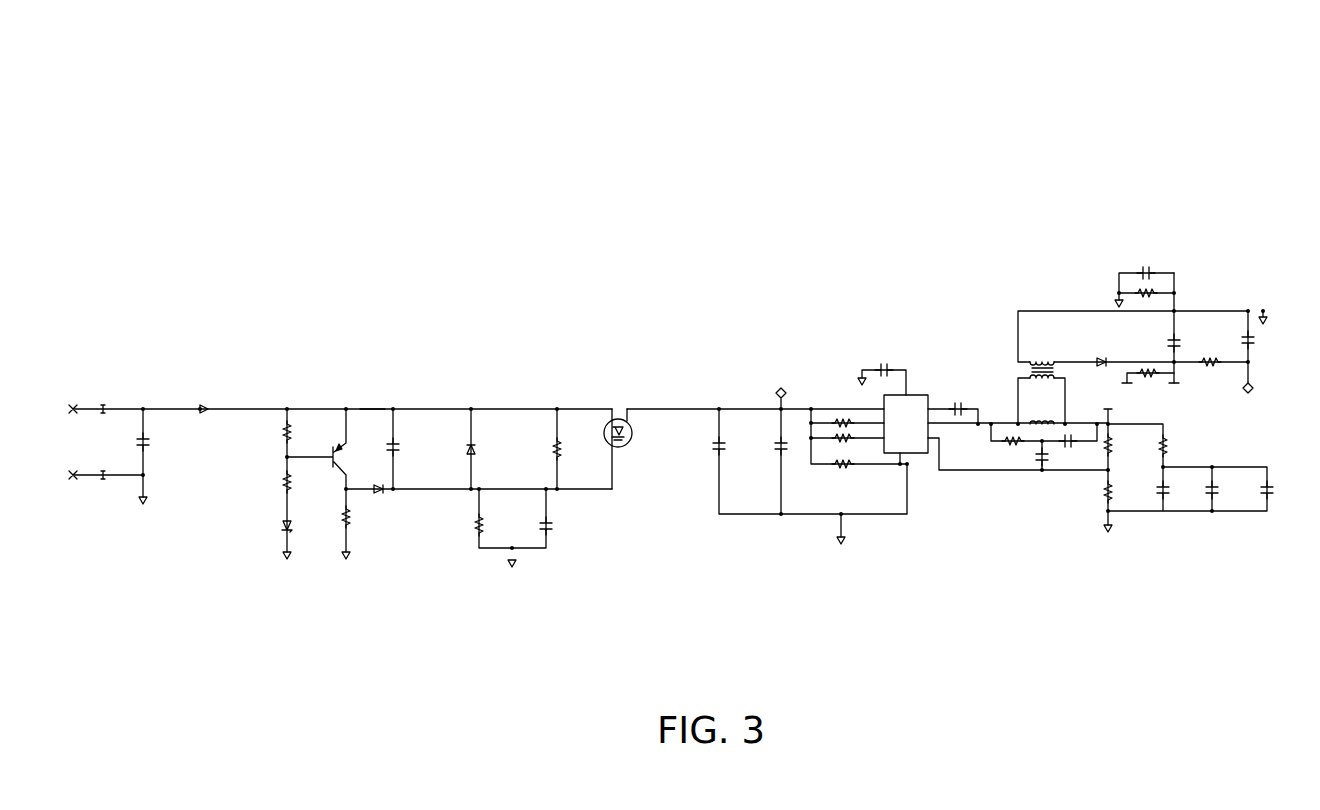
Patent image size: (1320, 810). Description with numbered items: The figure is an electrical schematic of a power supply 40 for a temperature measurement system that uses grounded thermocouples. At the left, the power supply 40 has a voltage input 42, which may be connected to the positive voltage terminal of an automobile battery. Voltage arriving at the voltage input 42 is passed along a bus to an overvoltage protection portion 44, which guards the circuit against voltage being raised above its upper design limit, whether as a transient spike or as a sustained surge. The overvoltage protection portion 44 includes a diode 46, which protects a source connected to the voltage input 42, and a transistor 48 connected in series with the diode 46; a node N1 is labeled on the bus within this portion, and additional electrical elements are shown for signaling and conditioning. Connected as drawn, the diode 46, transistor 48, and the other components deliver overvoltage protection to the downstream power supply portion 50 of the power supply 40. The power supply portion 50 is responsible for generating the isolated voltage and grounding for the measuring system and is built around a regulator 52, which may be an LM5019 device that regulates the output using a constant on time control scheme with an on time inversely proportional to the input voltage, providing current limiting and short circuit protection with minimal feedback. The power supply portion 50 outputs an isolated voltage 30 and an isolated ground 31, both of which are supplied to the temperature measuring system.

The power supply 40 is at (1125, 69).
The voltage input 42 is at (97, 402).
The overvoltage protection portion 44 is at (638, 347).
The diode 46 is at (207, 413).
The transistor 48 is at (630, 443).
The power supply portion 50 is at (1318, 222).
The regulator 52 is at (917, 448).
The node N1 is at (371, 409).
The isolated voltage 30 is at (1176, 385).
The isolated ground 31 is at (1266, 314).